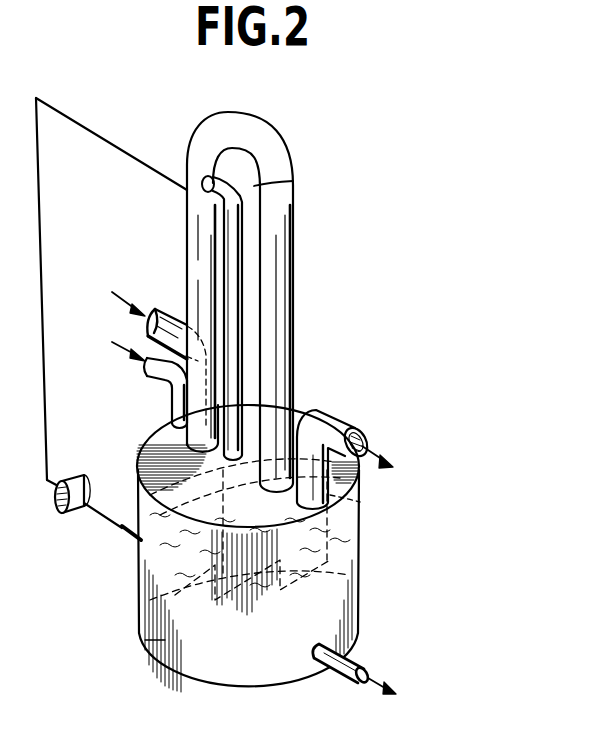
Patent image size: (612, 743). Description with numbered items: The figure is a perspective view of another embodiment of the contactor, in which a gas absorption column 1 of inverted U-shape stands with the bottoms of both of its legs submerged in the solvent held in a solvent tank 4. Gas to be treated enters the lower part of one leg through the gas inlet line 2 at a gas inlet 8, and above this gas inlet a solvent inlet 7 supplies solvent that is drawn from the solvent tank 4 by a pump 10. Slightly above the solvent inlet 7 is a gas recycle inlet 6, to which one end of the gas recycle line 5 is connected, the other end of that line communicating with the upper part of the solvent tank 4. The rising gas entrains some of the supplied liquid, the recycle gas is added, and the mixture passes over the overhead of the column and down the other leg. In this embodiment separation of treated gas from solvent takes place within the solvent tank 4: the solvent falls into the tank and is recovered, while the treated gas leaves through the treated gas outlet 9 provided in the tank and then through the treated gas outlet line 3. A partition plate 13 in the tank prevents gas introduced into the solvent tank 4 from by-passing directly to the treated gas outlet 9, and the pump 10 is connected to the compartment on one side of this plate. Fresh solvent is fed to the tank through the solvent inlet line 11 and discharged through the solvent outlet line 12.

The gas absorption column 1 is at (237, 122).
The gas inlet line 2 is at (150, 326).
The treated gas outlet line 3 is at (338, 413).
The solvent tank 4 is at (357, 578).
The gas recycle line 5 is at (289, 182).
The gas recycle inlet 6 is at (205, 178).
The solvent inlet 7 is at (203, 192).
The gas inlet 8 is at (200, 330).
The treated gas outlet 9 is at (345, 500).
The pump 10 is at (71, 519).
The solvent inlet line 11 is at (163, 380).
The solvent outlet line 12 is at (344, 683).
The partition plate 13 is at (148, 642).